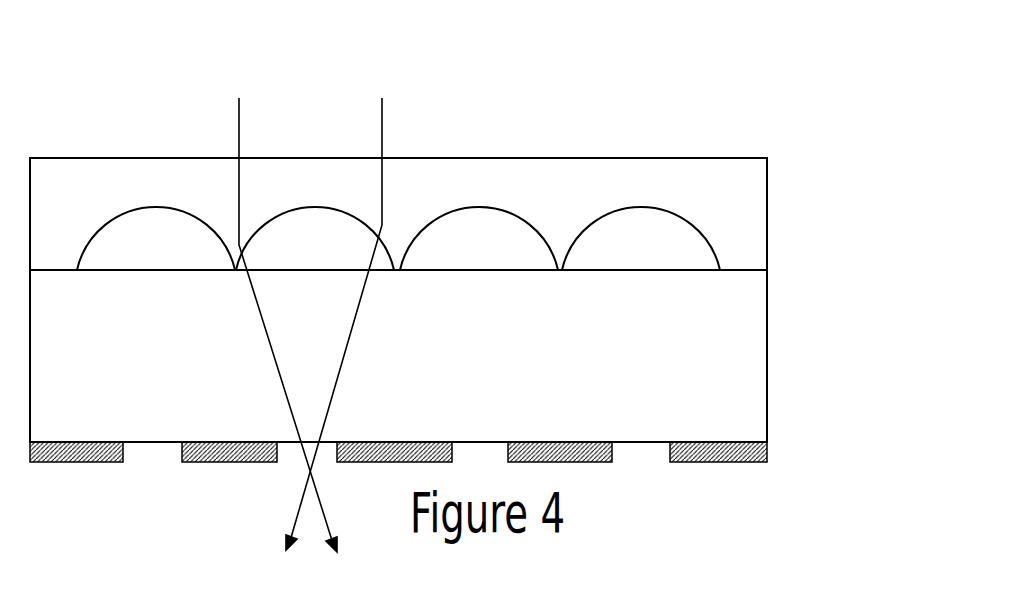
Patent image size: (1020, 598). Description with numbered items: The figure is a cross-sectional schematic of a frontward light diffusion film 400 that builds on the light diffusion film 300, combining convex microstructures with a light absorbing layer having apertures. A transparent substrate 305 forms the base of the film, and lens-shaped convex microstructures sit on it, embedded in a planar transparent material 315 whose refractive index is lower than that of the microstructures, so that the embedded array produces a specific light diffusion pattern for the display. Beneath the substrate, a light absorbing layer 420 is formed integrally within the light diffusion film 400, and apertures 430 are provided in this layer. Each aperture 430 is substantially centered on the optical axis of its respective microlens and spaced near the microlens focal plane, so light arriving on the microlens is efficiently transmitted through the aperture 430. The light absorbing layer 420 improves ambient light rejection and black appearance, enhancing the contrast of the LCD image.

The frontward light diffusion film 400 is at (630, 90).
The light diffusion film 300 is at (640, 197).
The transparent material 315 is at (767, 197).
The transparent substrate 305 is at (767, 358).
The light absorbing layer 420 is at (770, 450).
The apertures 430 is at (632, 442).